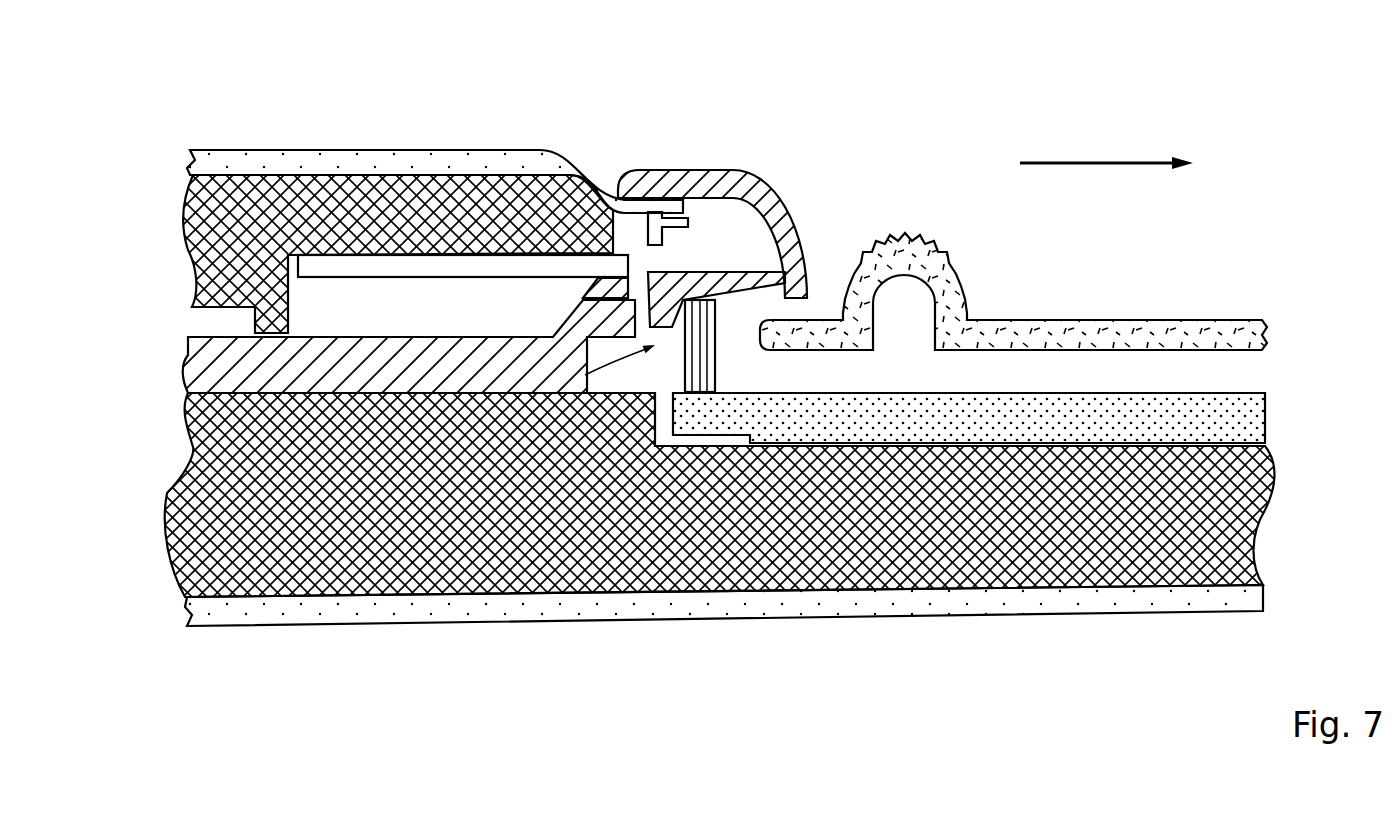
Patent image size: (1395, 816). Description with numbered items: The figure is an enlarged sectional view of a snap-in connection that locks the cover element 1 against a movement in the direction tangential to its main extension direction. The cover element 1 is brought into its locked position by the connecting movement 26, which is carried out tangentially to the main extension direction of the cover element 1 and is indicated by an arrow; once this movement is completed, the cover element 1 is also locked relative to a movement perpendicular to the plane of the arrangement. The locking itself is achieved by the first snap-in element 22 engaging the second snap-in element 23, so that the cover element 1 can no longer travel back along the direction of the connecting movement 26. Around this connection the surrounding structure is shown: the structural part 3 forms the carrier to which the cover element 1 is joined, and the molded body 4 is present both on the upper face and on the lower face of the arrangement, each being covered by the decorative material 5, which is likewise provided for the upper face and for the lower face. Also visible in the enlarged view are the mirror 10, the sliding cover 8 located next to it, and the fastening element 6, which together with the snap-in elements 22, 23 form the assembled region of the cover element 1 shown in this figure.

The cover element 1 is at (783, 265).
The structural part 3 is at (227, 374).
The molded body 4 is at (233, 255).
The decorative material 5 is at (233, 162).
The fastening element 6 is at (572, 268).
The sliding cover 8 is at (1045, 321).
The mirror 10 is at (1262, 422).
The first snap-in element 22 is at (707, 260).
The second snap-in element 23 is at (483, 385).
The connecting movement 26 is at (1093, 162).